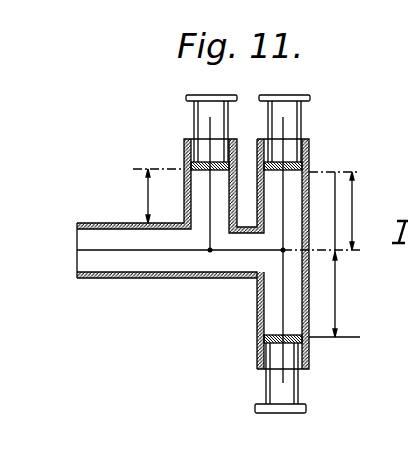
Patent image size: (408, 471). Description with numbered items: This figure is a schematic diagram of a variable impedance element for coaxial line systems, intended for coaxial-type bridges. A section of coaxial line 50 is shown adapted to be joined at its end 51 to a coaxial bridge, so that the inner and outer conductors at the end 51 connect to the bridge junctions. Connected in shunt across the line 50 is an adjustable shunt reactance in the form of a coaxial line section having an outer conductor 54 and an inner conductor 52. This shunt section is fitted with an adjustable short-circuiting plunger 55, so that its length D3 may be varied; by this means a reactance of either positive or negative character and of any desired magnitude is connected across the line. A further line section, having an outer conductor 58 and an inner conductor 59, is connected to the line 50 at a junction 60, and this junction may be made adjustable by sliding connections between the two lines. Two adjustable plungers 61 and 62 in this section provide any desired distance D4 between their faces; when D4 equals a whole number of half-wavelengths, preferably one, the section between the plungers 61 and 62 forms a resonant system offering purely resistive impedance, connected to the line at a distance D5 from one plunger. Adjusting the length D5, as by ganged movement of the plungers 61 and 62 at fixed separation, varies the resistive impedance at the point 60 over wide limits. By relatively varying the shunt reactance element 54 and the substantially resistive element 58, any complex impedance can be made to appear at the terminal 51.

The coaxial line section 50 is at (128, 222).
The end 51 is at (77, 258).
The inner conductor 52 is at (210, 240).
The outer conductor 54 is at (184, 141).
The adjustable short-circuiting plunger 55 is at (173, 182).
The outer conductor 58 is at (305, 317).
The inner conductor 59 is at (282, 317).
The junction 60 is at (282, 253).
The adjustable plunger 61 is at (311, 172).
The adjustable plunger 62 is at (302, 333).
The length D3 is at (158, 196).
The distance D4 is at (335, 293).
The distance D5 is at (339, 211).